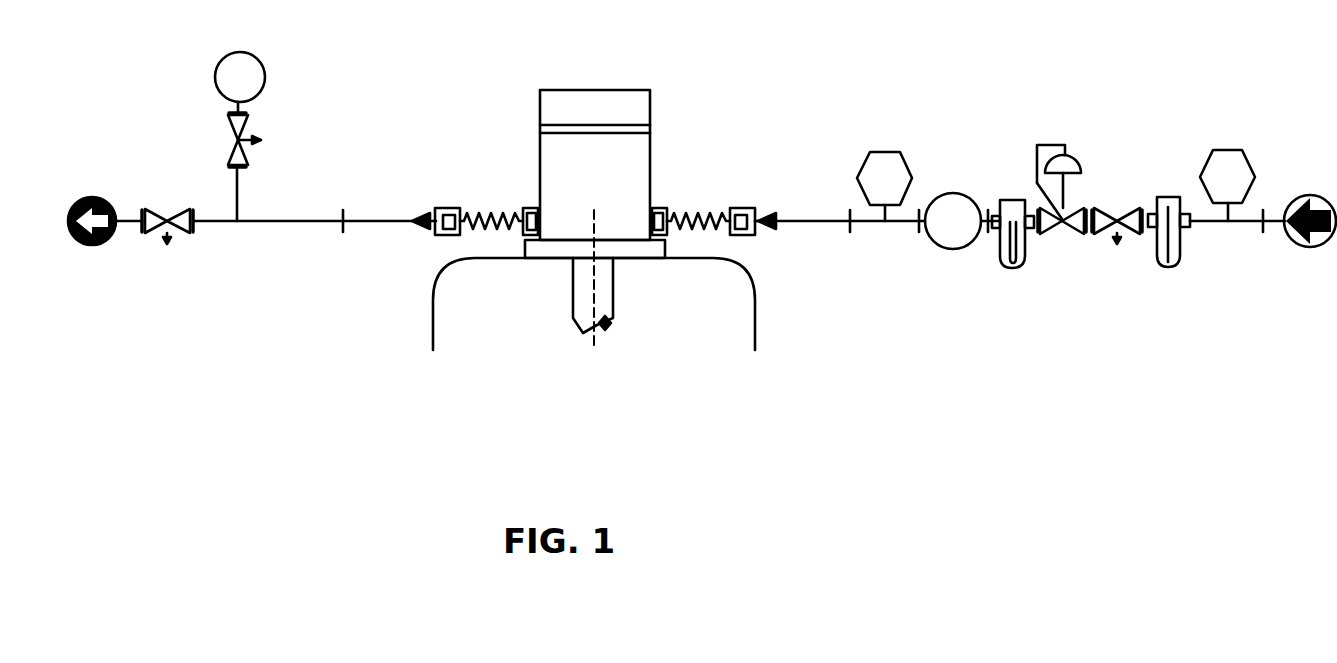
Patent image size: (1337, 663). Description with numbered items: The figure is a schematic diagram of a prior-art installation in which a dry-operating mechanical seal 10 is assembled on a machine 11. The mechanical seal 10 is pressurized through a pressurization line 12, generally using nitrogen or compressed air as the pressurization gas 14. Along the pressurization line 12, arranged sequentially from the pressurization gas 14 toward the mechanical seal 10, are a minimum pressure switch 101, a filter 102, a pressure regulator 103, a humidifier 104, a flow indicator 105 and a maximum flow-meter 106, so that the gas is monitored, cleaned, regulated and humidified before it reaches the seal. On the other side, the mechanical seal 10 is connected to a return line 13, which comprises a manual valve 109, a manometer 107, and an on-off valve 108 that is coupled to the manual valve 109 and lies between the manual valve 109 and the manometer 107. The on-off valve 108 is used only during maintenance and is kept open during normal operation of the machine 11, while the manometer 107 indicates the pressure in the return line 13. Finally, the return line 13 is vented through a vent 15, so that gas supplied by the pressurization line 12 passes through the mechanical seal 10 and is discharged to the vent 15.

The dry-operating mechanical seal 10 is at (653, 80).
The machine 11 is at (755, 370).
The pressurization line 12 is at (1263, 292).
The return line 13 is at (137, 266).
The pressurization gas 14 is at (1265, 137).
The vent 15 is at (140, 183).
The minimum pressure switch 101 is at (1265, 137).
The filter 102 is at (1147, 137).
The pressure regulator 103 is at (1147, 137).
The humidifier 104 is at (988, 137).
The flow indicator 105 is at (920, 137).
The maximum flow-meter 106 is at (848, 138).
The manometer 107 is at (275, 47).
The on-off valve 108 is at (281, 115).
The manual valve 109 is at (196, 183).